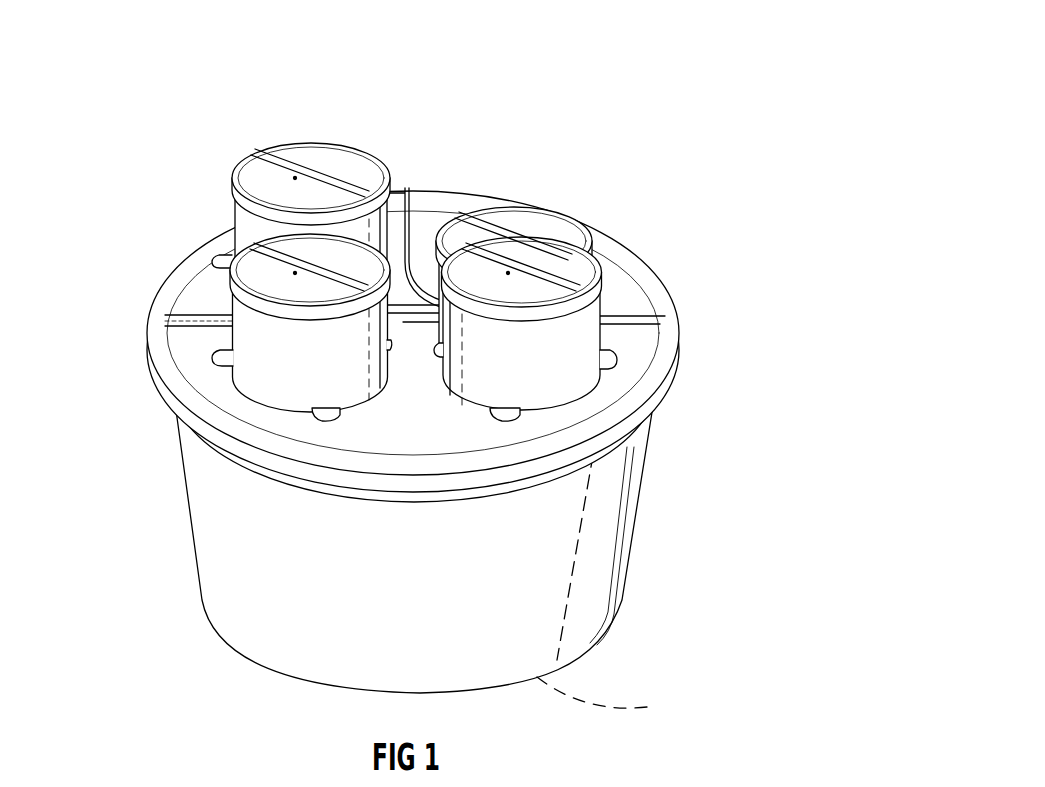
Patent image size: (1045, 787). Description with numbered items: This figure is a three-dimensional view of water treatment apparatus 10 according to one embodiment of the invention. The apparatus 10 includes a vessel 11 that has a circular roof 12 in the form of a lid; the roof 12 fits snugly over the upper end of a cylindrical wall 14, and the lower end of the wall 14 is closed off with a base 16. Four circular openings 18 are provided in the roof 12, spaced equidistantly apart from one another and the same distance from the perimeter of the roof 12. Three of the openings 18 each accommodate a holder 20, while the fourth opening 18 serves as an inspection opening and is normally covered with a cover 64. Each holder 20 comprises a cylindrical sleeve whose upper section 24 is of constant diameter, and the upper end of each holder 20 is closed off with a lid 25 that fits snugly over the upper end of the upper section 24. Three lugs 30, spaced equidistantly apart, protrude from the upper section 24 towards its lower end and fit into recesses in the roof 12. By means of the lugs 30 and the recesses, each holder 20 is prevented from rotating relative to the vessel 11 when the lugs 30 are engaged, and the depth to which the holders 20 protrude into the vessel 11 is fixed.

The water treatment apparatus 10 is at (607, 98).
The vessel 11 is at (675, 570).
The circular roof 12 is at (445, 200).
The cylindrical wall 14 is at (598, 528).
The base 16 is at (613, 697).
The circular openings 18 is at (233, 397).
The holder 20 is at (422, 302).
The upper section 24 is at (485, 373).
The lid 25 is at (343, 150).
The lugs 30 is at (613, 357).
The cover 64 is at (540, 223).